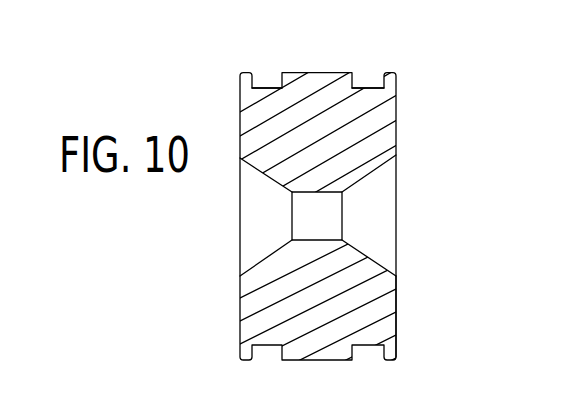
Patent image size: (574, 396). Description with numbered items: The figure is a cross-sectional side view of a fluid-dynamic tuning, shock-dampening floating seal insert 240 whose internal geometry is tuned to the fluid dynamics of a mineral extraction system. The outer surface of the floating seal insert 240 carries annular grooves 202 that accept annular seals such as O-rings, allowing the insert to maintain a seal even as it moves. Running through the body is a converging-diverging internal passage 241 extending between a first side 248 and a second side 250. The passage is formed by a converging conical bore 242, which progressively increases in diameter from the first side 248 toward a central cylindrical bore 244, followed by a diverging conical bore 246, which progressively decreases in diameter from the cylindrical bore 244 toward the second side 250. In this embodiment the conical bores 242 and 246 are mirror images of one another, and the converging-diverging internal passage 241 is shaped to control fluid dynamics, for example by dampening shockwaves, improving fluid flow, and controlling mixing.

The annular grooves 202 is at (367, 88).
The floating seal insert 240 is at (415, 113).
The converging-diverging internal passage 241 is at (258, 227).
The converging conical bore 242 is at (371, 260).
The cylindrical bore 244 is at (345, 183).
The diverging conical bore 246 is at (268, 175).
The first side 248 is at (396, 321).
The second side 250 is at (240, 303).